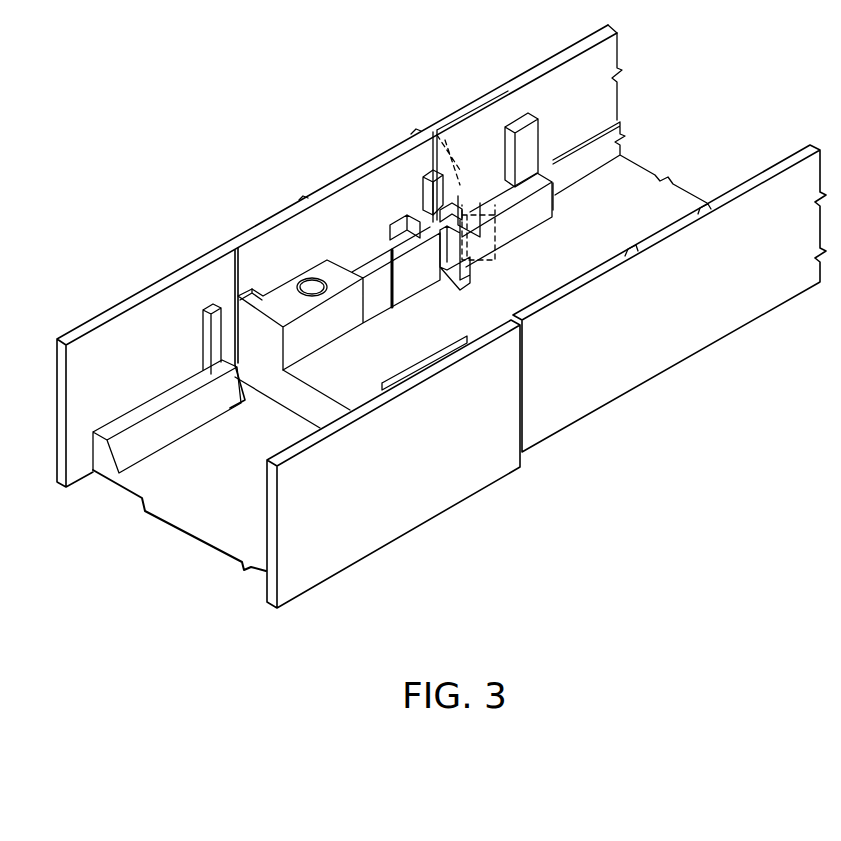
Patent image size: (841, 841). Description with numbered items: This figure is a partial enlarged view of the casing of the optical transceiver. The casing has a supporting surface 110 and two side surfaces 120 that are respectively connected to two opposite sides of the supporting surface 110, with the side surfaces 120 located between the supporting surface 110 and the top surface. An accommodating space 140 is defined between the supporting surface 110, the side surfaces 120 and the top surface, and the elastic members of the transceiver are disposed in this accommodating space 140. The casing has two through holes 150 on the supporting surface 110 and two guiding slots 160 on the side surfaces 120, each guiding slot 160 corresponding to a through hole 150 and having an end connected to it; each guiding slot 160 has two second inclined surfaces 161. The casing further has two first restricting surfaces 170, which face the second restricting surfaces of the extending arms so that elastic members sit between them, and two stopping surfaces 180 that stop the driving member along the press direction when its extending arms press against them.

The supporting surface 110 is at (611, 204).
The side surfaces 120 is at (565, 98).
The accommodating space 140 is at (213, 470).
The through holes 150 is at (493, 250).
The guiding slots 160 is at (463, 149).
The second inclined surfaces 161 is at (467, 187).
The first restricting surfaces 170 is at (347, 268).
The stopping surfaces 180 is at (268, 290).